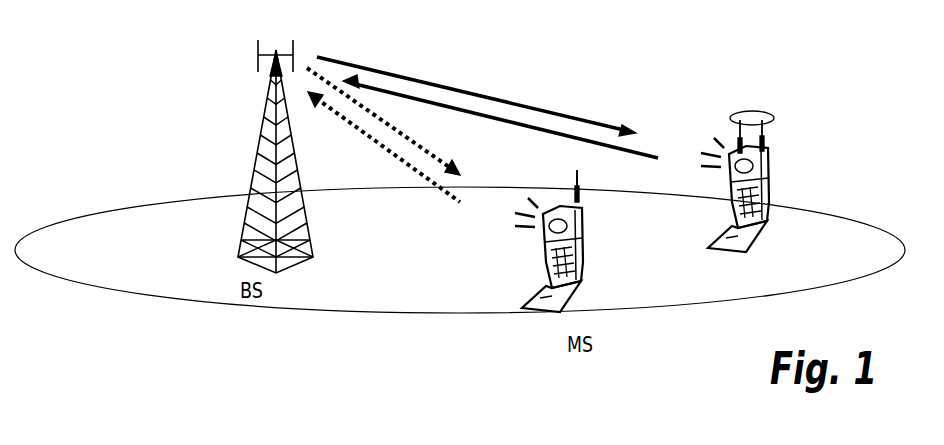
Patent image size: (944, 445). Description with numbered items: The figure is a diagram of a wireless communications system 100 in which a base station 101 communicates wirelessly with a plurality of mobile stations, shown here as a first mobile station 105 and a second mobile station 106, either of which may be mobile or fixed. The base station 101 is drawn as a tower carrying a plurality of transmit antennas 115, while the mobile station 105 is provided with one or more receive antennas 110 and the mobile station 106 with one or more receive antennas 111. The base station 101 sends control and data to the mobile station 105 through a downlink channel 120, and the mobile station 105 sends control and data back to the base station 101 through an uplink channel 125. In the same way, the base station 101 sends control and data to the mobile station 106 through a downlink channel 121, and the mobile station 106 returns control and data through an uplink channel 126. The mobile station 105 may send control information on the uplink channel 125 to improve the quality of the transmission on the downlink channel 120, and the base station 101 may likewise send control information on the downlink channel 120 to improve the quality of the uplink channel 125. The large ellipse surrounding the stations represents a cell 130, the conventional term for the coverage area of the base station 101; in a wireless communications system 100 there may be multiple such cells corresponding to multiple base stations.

The wireless communications system 100 is at (113, 38).
The base station 101 is at (242, 245).
The mobile station 105 is at (783, 173).
The mobile station 106 is at (588, 223).
The receive antenna 110 is at (752, 110).
The receive antenna 111 is at (579, 186).
The transmit antennas 115 is at (257, 52).
The downlink channel 120 is at (478, 82).
The downlink channel 121 is at (428, 150).
The uplink channel 125 is at (497, 128).
The uplink channel 126 is at (377, 155).
The cell 130 is at (423, 305).